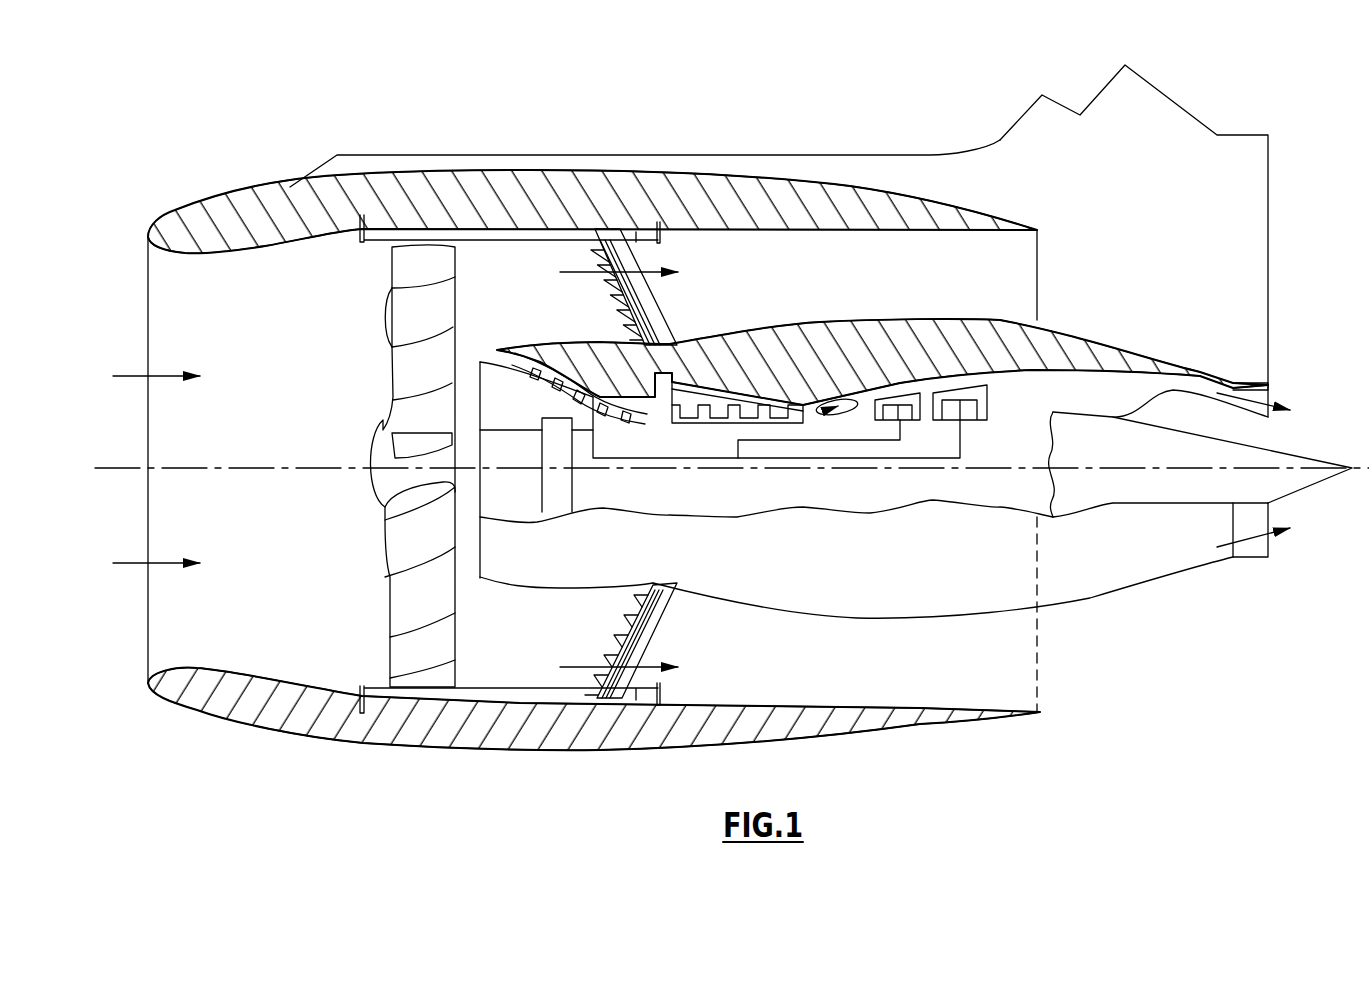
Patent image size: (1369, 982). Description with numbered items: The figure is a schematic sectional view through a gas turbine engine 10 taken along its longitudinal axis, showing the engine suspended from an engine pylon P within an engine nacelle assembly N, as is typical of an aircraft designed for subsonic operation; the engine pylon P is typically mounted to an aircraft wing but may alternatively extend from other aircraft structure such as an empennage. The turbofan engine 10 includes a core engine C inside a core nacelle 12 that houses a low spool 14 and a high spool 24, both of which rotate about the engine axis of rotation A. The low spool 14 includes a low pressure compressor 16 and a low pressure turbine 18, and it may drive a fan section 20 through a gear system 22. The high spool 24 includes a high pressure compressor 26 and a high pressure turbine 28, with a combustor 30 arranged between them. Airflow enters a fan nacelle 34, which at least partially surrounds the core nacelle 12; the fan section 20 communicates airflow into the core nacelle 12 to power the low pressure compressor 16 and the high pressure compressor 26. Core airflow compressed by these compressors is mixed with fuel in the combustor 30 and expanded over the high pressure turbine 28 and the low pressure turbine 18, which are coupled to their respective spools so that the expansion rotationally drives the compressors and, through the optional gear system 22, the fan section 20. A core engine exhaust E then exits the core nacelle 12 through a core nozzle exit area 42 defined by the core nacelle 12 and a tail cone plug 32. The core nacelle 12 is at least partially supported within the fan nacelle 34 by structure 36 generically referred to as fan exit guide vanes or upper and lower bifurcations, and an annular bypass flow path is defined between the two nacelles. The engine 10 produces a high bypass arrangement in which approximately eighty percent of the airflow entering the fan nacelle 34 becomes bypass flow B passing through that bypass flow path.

The gas turbine engine 10 is at (314, 87).
The core nacelle 12 is at (1146, 350).
The low spool 14 is at (800, 466).
The low pressure compressor 16 is at (623, 416).
The low pressure turbine 18 is at (973, 418).
The fan section 20 is at (372, 621).
The gear system 22 is at (563, 470).
The high spool 24 is at (766, 452).
The high pressure compressor 26 is at (718, 413).
The high pressure turbine 28 is at (910, 418).
The combustor 30 is at (845, 420).
The tail cone plug 32 is at (1300, 457).
The fan nacelle 34 is at (447, 182).
The structure 36 is at (657, 320).
The core nozzle exit area 42 is at (1272, 396).
The engine axis of rotation A is at (118, 470).
The bypass flow B is at (570, 665).
The core engine C is at (1134, 618).
The core engine exhaust E is at (1277, 525).
The engine nacelle assembly N is at (647, 156).
The engine pylon P is at (1258, 198).